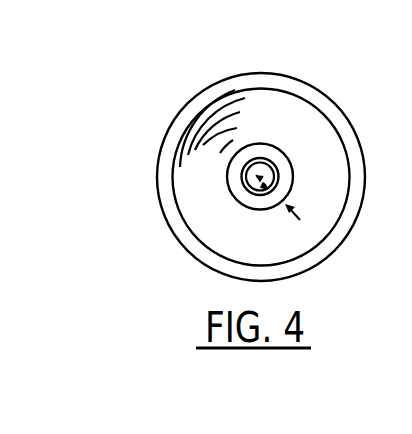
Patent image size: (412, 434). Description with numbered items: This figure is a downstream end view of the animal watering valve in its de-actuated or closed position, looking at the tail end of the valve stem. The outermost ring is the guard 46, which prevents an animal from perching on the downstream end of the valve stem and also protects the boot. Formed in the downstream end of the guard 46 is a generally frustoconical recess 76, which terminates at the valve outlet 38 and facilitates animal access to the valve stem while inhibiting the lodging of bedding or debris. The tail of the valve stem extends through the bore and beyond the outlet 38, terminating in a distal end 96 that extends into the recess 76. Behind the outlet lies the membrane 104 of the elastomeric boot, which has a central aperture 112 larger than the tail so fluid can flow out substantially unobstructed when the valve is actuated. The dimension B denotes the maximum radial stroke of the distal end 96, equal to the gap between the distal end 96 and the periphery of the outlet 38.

The guard 46 is at (211, 76).
The frustoconical recess 76 is at (209, 128).
The valve outlet 38 is at (232, 157).
The distal end 96 is at (255, 180).
The membrane 104 is at (259, 150).
The central aperture 112 is at (272, 160).
The maximum possible stroke B is at (272, 193).